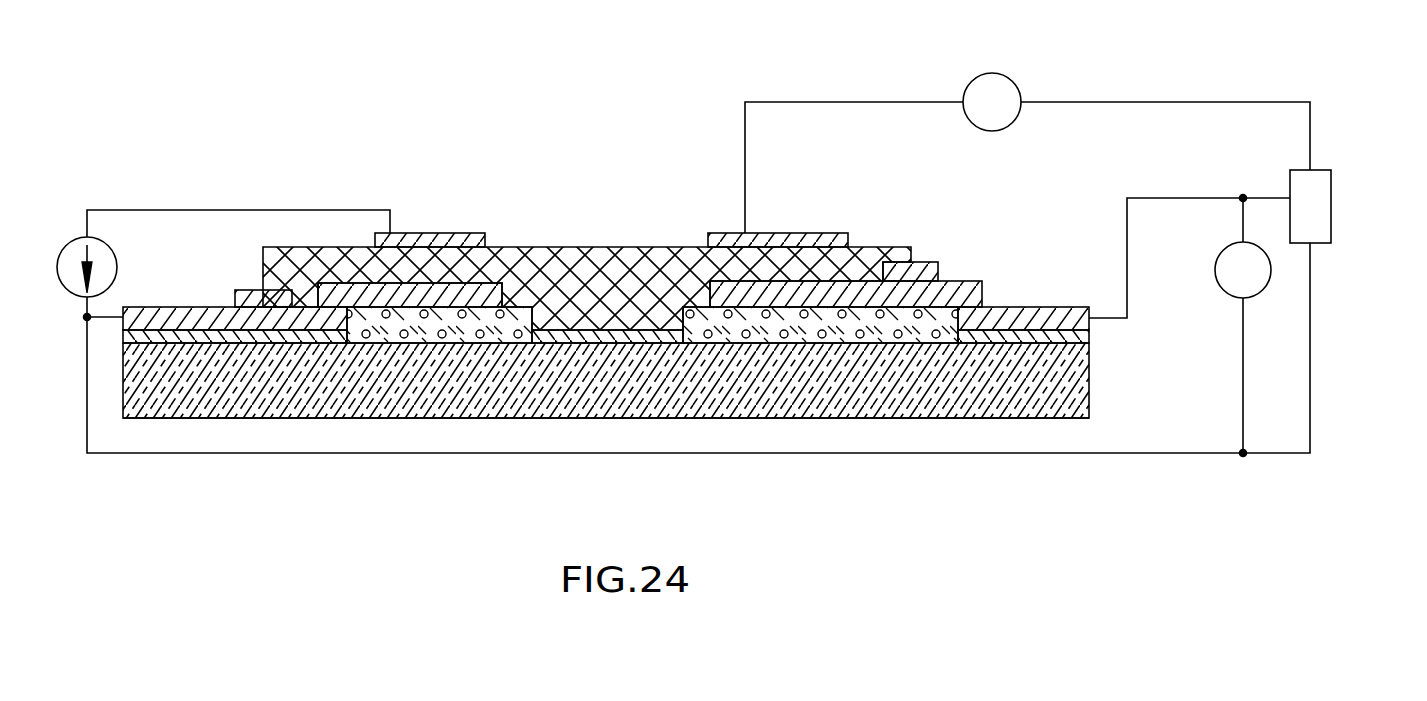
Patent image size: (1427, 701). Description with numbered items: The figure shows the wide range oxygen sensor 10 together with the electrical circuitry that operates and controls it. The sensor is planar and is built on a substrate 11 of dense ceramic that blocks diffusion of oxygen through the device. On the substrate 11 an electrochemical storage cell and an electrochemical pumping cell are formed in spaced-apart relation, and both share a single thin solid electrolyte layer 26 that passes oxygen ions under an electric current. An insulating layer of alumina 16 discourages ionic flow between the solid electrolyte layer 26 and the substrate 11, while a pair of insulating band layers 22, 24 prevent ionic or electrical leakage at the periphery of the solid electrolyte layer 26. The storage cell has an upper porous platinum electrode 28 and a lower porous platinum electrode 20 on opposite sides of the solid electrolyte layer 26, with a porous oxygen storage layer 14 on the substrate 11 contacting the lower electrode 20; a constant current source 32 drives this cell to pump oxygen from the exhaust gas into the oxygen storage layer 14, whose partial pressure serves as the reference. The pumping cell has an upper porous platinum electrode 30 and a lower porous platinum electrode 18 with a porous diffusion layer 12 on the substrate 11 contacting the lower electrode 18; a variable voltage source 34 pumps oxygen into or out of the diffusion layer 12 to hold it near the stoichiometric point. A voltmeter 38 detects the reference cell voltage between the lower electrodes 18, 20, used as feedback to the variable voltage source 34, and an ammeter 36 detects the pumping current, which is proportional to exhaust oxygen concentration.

The wide range oxygen sensor 10 is at (1177, 400).
The substrate 11 is at (548, 403).
The diffusion layer 12 is at (684, 322).
The oxygen storage layer 14 is at (534, 307).
The insulating layer of alumina 16 is at (600, 340).
The lower porous platinum electrode 18 is at (983, 290).
The lower porous platinum electrode 20 is at (143, 308).
The insulating band layer 22 is at (932, 266).
The insulating band layer 24 is at (243, 290).
The solid electrolyte layer 26 is at (350, 257).
The upper porous platinum electrode 28 is at (417, 233).
The upper porous platinum electrode 30 is at (768, 232).
The constant current source 32 is at (72, 243).
The variable voltage source 34 is at (1315, 207).
The ammeter 36 is at (1013, 120).
The voltmeter 38 is at (1269, 276).